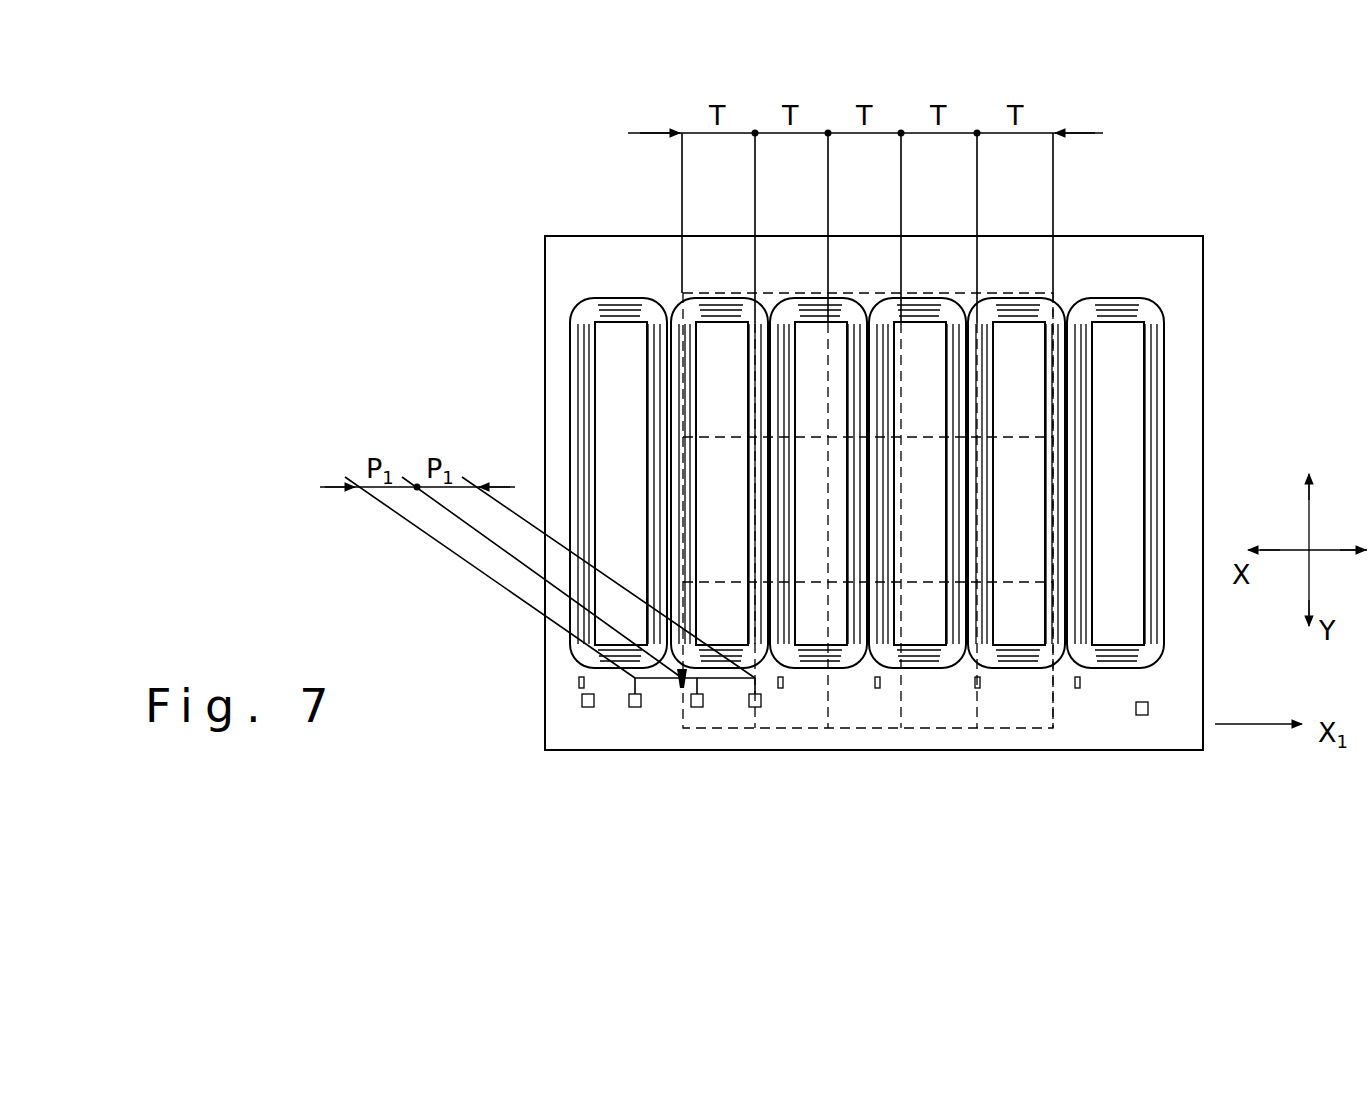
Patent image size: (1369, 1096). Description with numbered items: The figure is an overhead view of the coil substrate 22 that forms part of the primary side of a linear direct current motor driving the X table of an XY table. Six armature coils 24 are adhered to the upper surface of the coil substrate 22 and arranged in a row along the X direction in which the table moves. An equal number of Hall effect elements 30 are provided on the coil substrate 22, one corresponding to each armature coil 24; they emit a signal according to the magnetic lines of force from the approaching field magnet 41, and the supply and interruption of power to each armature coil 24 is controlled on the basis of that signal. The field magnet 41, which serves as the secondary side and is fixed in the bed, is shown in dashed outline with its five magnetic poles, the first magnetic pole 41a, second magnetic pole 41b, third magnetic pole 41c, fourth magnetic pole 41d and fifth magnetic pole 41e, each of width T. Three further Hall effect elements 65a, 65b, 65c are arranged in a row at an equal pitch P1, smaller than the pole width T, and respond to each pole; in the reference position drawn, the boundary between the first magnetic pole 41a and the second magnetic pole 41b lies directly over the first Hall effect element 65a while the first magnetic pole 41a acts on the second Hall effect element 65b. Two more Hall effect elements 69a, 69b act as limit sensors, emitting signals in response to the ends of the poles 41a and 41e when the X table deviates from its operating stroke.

The coil substrate 22 is at (1208, 306).
The armature coil 24 is at (618, 318).
The Hall effect element 30 is at (792, 757).
The field magnet 41 is at (862, 292).
The first magnetic pole 41a is at (762, 724).
The second magnetic pole 41b is at (832, 724).
The third magnetic pole 41c is at (903, 724).
The fourth magnetic pole 41d is at (979, 724).
The fifth magnetic pole 41e is at (1051, 724).
The first Hall effect element 65a is at (762, 712).
The second Hall effect element 65b is at (702, 710).
The third Hall effect element 65c is at (635, 708).
The Hall effect element (limit sensor) 69a is at (586, 708).
The Hall effect element (limit sensor) 69b is at (1143, 716).